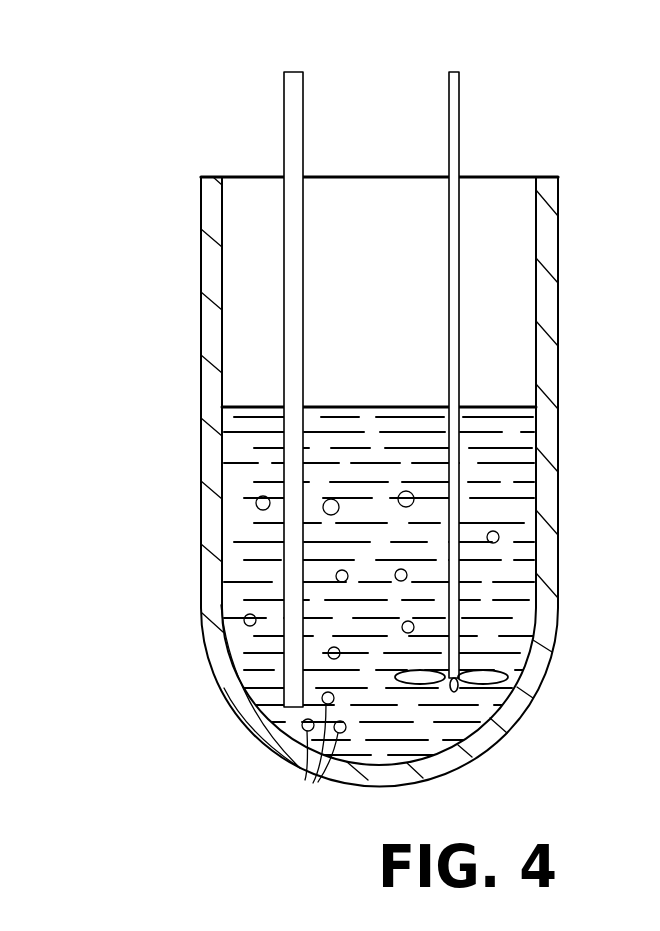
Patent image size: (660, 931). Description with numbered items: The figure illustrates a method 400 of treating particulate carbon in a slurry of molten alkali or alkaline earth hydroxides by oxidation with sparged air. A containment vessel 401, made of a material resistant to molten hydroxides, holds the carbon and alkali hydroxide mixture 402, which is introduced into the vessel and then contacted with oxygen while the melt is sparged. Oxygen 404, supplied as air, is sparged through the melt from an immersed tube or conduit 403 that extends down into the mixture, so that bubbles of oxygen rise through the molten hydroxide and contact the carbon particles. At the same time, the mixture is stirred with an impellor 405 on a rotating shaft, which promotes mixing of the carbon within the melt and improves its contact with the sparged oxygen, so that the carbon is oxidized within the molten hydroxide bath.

The method 400 is at (393, 48).
The vessel 401 is at (560, 298).
The carbon and alkali hydroxide mixture 402 is at (388, 408).
The immersed tube or conduit 403 is at (284, 122).
The oxygen 404 is at (287, 753).
The impellor 405 is at (460, 120).